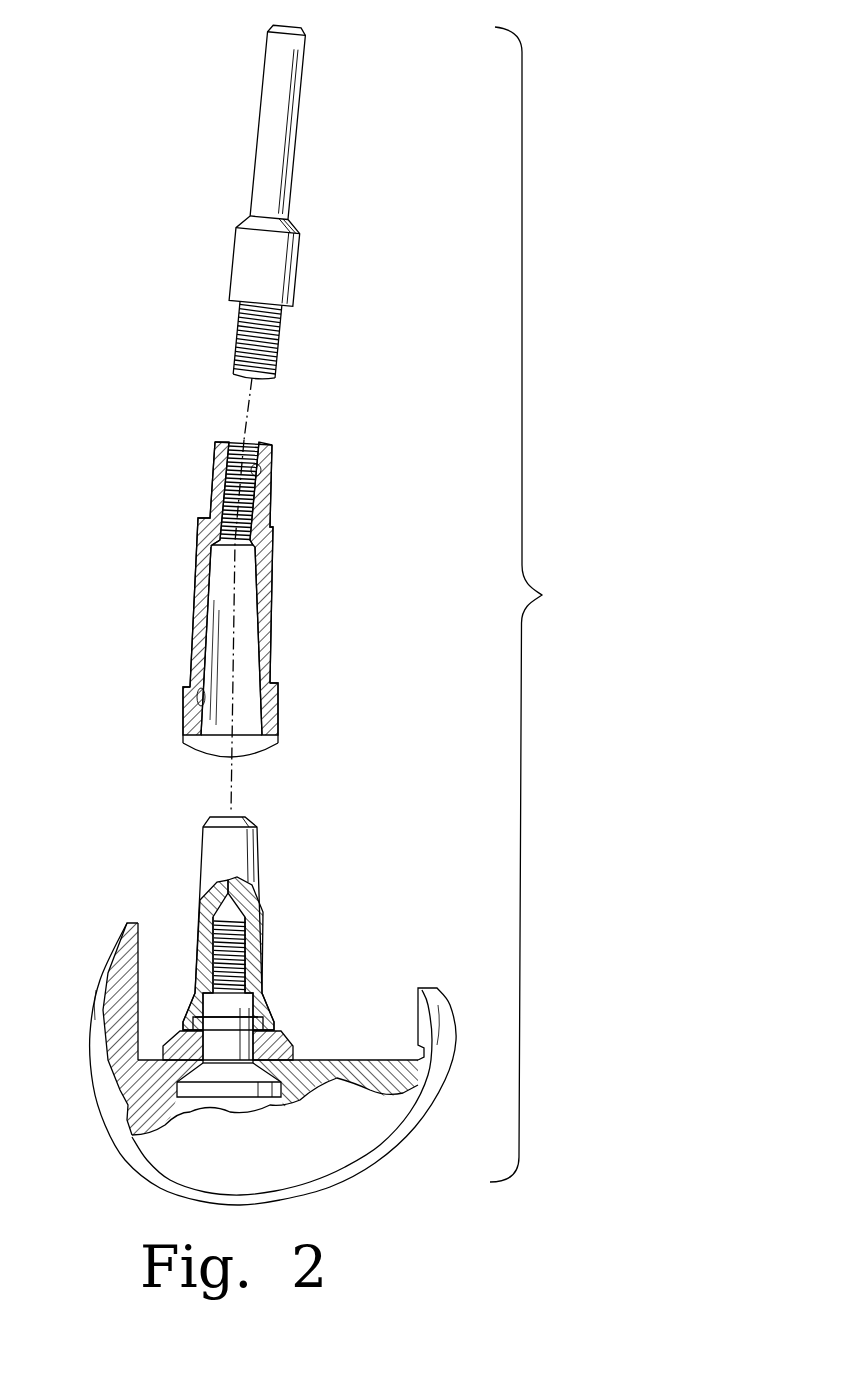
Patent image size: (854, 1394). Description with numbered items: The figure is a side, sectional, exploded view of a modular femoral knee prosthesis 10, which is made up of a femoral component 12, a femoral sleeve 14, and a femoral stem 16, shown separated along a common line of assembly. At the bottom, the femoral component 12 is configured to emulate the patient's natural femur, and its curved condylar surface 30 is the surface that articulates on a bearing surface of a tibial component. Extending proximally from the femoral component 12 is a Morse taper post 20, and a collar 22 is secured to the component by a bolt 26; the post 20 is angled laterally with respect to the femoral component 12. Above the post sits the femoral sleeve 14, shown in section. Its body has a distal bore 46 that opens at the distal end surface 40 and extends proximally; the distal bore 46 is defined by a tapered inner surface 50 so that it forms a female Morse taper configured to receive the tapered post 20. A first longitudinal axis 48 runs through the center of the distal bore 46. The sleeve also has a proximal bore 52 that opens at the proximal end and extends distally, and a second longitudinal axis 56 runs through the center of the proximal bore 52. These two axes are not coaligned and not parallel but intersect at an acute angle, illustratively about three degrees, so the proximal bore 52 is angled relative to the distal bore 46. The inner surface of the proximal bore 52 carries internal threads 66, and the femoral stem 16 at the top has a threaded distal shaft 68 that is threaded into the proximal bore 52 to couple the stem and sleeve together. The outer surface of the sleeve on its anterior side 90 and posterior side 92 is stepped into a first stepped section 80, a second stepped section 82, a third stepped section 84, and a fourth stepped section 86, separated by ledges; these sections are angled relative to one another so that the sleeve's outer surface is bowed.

The modular femoral knee prosthesis 10 is at (532, 604).
The femoral component 12 is at (118, 1150).
The femoral sleeve 14 is at (103, 675).
The femoral stem 16 is at (398, 203).
The Morse taper post 20 is at (252, 858).
The collar 22 is at (290, 1043).
The bolt 26 is at (243, 1012).
The condylar surface 30 is at (337, 1165).
The distal end surface 40 is at (222, 757).
The distal bore 46 is at (242, 712).
The first longitudinal axis 48 is at (232, 652).
The tapered inner surface 50 is at (186, 695).
The proximal bore 52 is at (249, 439).
The second longitudinal axis 56 is at (243, 412).
The internal threads 66 is at (261, 469).
The threaded distal shaft 68 is at (277, 352).
The first stepped section 80 is at (278, 707).
The second stepped section 82 is at (268, 636).
The third stepped section 84 is at (268, 548).
The fourth stepped section 86 is at (270, 515).
The anterior side 90 is at (153, 597).
The posterior side 92 is at (308, 598).